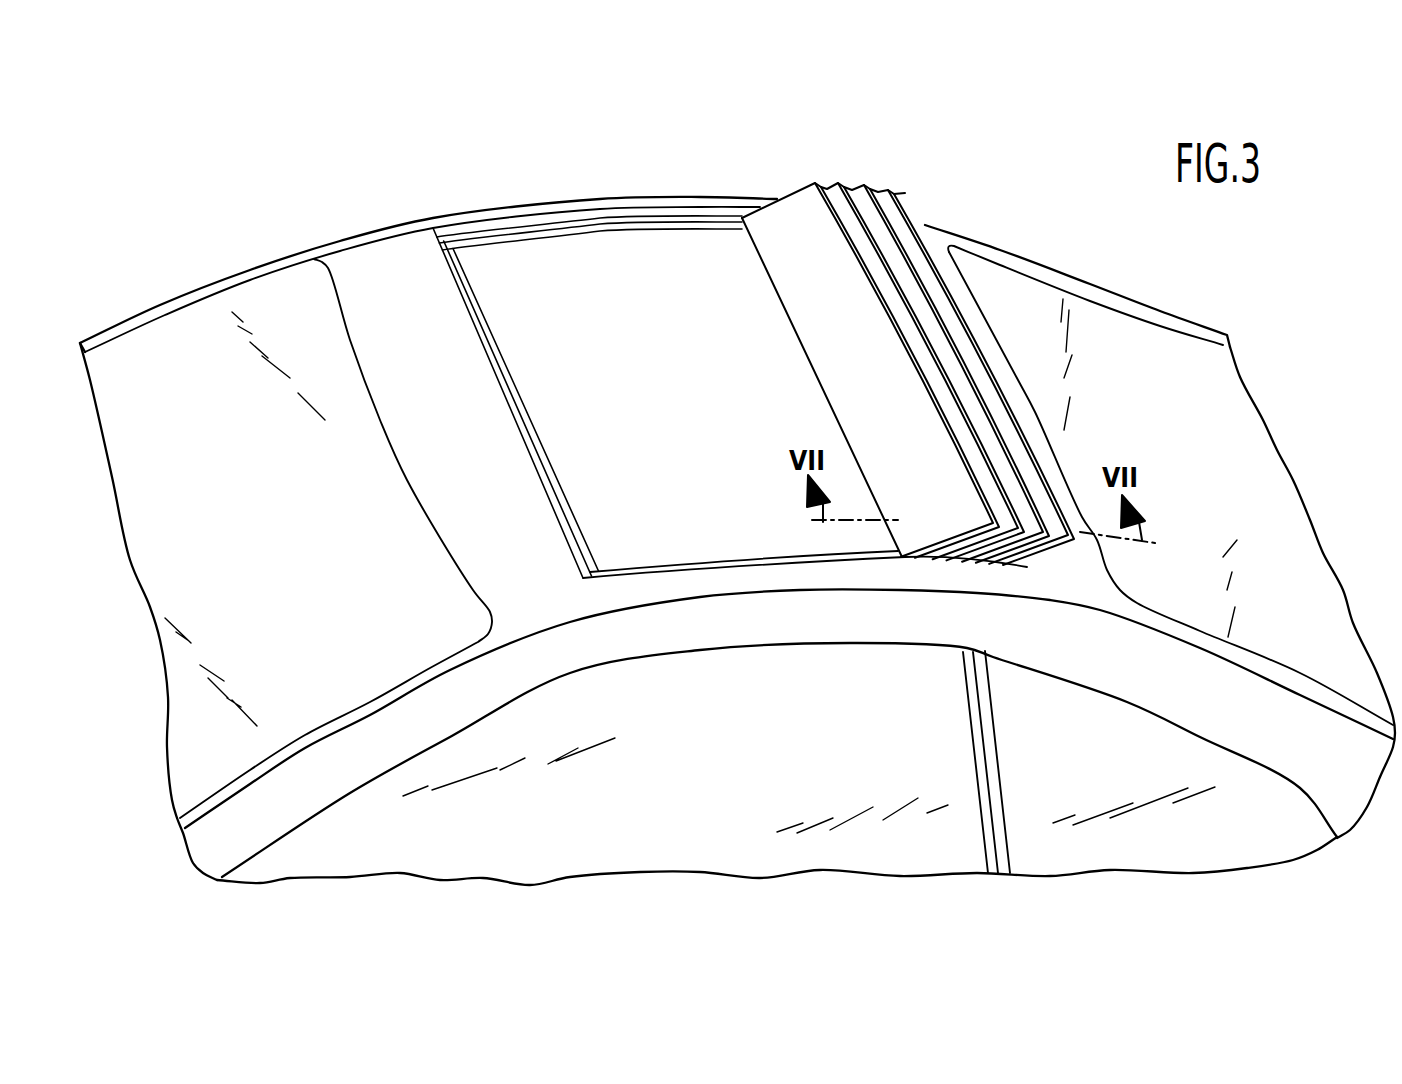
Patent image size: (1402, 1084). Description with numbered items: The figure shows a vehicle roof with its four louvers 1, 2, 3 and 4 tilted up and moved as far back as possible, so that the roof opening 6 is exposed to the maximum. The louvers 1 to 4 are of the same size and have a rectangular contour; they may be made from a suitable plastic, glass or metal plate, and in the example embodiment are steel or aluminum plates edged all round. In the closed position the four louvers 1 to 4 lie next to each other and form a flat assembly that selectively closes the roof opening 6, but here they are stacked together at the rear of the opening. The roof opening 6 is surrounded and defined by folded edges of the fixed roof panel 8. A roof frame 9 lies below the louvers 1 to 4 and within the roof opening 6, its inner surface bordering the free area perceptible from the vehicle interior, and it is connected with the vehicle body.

The louver 1 is at (792, 212).
The louver 2 is at (836, 195).
The louver 3 is at (860, 192).
The louver 4 is at (889, 200).
The roof opening 6 is at (585, 270).
The fixed roof panel 8 is at (455, 430).
The roof frame 9 is at (513, 240).